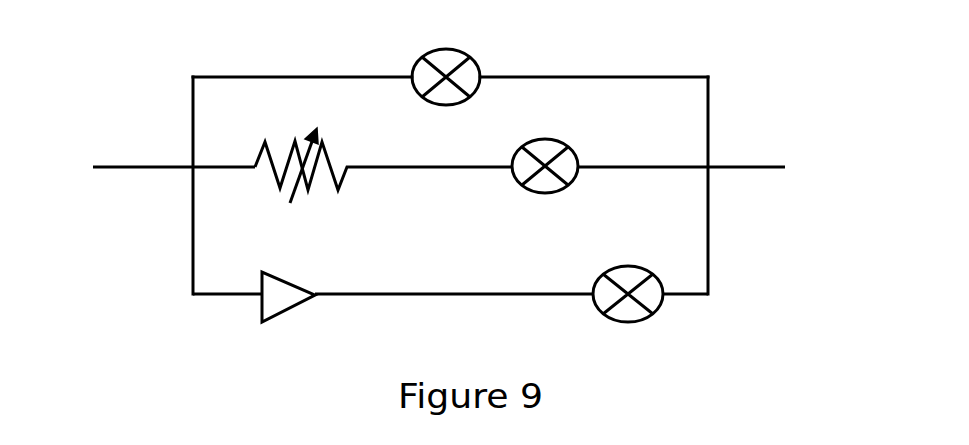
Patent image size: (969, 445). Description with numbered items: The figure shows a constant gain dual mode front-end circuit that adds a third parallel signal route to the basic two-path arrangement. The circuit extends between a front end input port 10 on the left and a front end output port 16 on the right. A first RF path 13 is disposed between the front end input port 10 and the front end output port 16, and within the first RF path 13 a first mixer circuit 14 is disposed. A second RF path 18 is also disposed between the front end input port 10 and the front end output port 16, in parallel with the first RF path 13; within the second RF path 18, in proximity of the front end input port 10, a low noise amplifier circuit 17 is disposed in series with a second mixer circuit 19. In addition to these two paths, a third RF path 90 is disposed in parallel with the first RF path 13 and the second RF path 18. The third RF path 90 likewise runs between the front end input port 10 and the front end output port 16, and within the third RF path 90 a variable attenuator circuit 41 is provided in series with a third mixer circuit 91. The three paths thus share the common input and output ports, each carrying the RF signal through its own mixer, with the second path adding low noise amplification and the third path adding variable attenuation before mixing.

The front end input port 10 is at (150, 168).
The first RF path 13 is at (268, 77).
The first mixer circuit 14 is at (482, 70).
The front end output port 16 is at (750, 163).
The low noise amplifier circuit 17 is at (287, 317).
The second RF path 18 is at (437, 294).
The second mixer circuit 19 is at (652, 315).
The variable attenuator circuit 41 is at (313, 187).
The third RF path 90 is at (212, 168).
The third mixer circuit 91 is at (583, 162).